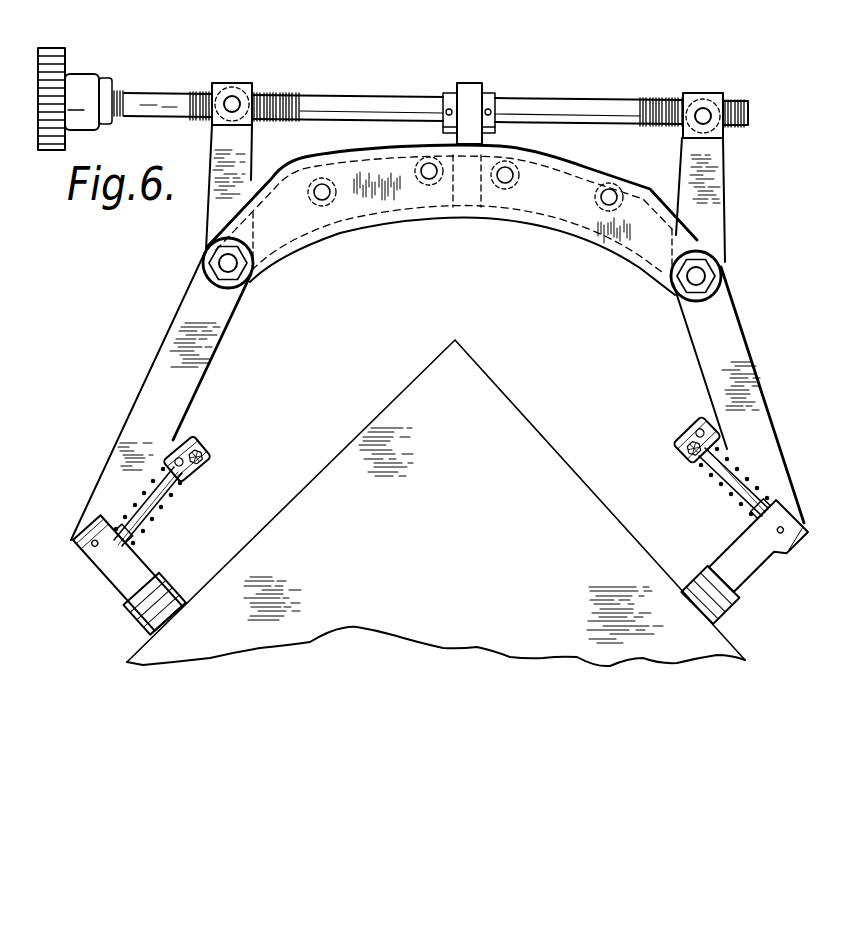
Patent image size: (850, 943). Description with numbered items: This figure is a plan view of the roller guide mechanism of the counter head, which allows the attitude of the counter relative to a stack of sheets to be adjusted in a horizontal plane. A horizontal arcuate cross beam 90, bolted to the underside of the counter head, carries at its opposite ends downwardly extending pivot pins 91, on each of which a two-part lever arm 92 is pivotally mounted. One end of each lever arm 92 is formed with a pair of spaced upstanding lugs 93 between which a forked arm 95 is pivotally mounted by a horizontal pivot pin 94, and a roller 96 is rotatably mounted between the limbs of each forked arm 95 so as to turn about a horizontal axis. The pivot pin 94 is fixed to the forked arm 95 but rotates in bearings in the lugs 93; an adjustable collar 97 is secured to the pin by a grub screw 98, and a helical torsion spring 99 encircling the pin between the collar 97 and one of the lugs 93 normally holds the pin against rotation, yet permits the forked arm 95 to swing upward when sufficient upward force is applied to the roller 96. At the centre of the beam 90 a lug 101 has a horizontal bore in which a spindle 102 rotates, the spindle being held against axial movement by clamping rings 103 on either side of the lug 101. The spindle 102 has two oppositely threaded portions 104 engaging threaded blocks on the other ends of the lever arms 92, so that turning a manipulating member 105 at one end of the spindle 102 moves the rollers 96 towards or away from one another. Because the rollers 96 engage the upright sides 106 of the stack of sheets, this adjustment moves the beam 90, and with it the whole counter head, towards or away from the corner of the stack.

The arcuate cross beam 90 is at (547, 207).
The pivot pin 91 is at (227, 262).
The lever arm 92 is at (167, 326).
The upstanding lugs 93 is at (797, 527).
The horizontal pivot pin 94 is at (743, 485).
The forked arm 95 is at (128, 565).
The roller 96 is at (177, 608).
The adjustable collar 97 is at (707, 425).
The grub screw 98 is at (688, 433).
The helical torsion spring 99 is at (723, 485).
The lug 101 is at (467, 92).
The spindle 102 is at (593, 105).
The clamping rings 103 is at (447, 95).
The threaded portions 104 is at (277, 103).
The manipulating member 105 is at (88, 87).
The upright sides of stack of sheets 106 is at (327, 457).